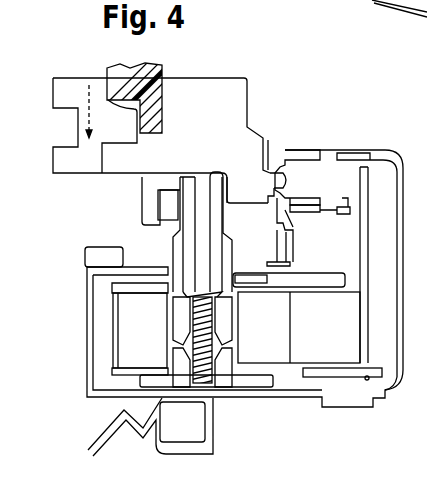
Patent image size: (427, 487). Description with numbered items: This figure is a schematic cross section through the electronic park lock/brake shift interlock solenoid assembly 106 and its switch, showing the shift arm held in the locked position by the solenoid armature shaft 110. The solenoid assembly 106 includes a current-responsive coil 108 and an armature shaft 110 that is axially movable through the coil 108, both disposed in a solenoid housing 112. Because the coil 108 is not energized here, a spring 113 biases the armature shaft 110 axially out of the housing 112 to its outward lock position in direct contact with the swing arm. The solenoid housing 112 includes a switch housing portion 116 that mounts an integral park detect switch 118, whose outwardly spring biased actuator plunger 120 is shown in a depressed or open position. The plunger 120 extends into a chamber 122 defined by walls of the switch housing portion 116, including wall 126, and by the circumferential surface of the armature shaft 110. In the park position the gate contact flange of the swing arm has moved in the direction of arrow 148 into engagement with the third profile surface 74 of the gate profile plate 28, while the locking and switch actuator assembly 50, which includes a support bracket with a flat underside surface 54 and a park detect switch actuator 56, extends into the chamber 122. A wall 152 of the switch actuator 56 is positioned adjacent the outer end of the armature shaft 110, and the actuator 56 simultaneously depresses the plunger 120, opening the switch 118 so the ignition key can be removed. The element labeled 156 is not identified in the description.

The gate profile plate 28 is at (165, 97).
The locking and switch actuator assembly 50 is at (268, 165).
The flat underside surface 54 is at (107, 178).
The park detect switch actuator 56 is at (292, 214).
The third profile surface 74 is at (153, 178).
The electronic park lock/brake shift interlock solenoid assembly 106 is at (333, 140).
The current-responsive coil 108 is at (130, 322).
The armature shaft 110 is at (222, 243).
The solenoid housing 112 is at (405, 365).
The spring 113 is at (213, 327).
The switch housing portion 116 is at (362, 150).
The park detect switch 118 is at (330, 191).
The actuator plunger 120 is at (280, 172).
The chamber 122 is at (263, 232).
The wall 126 is at (270, 233).
The arrow 148 is at (79, 84).
The wall 152 is at (215, 173).
The seal insert 156 is at (108, 117).